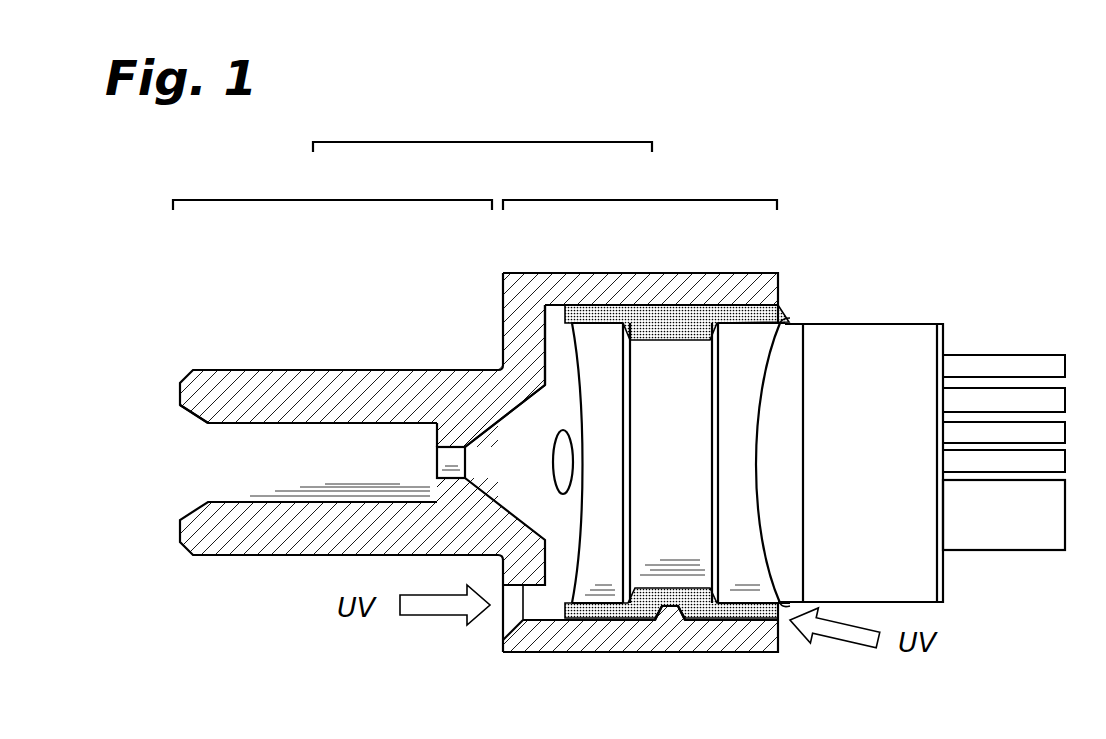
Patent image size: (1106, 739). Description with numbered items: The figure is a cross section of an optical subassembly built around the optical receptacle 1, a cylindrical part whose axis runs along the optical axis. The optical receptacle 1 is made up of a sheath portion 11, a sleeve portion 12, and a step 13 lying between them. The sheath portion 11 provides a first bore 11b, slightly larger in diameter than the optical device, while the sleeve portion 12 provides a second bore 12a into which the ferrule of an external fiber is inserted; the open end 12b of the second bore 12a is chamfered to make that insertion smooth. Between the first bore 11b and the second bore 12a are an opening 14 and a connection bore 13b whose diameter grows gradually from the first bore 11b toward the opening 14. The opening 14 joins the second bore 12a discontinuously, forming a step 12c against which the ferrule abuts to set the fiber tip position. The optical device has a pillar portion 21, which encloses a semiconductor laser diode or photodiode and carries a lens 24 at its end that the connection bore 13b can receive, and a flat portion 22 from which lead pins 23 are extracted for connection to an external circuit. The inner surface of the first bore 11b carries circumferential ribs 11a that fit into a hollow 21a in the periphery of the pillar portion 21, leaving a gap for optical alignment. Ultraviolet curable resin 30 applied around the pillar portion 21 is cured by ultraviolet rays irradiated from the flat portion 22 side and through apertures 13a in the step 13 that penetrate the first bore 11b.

The optical receptacle 1 is at (504, 130).
The sheath portion 11 is at (640, 407).
The circumferential ribs 11a is at (672, 615).
The first bore 11b is at (548, 316).
The sleeve portion 12 is at (335, 359).
The second bore 12a is at (222, 463).
The open end 12b is at (194, 408).
The step 12c is at (437, 442).
The step 13 is at (503, 292).
The apertures 13a is at (521, 623).
The connection bore 13b is at (505, 408).
The opening 14 is at (445, 462).
The pillar portion 21 is at (590, 620).
The hollow 21a is at (637, 330).
The flat portion 22 is at (915, 343).
The lead pins 23 is at (1010, 540).
The lens 24 is at (553, 462).
The ultraviolet curable resin 30 is at (722, 312).